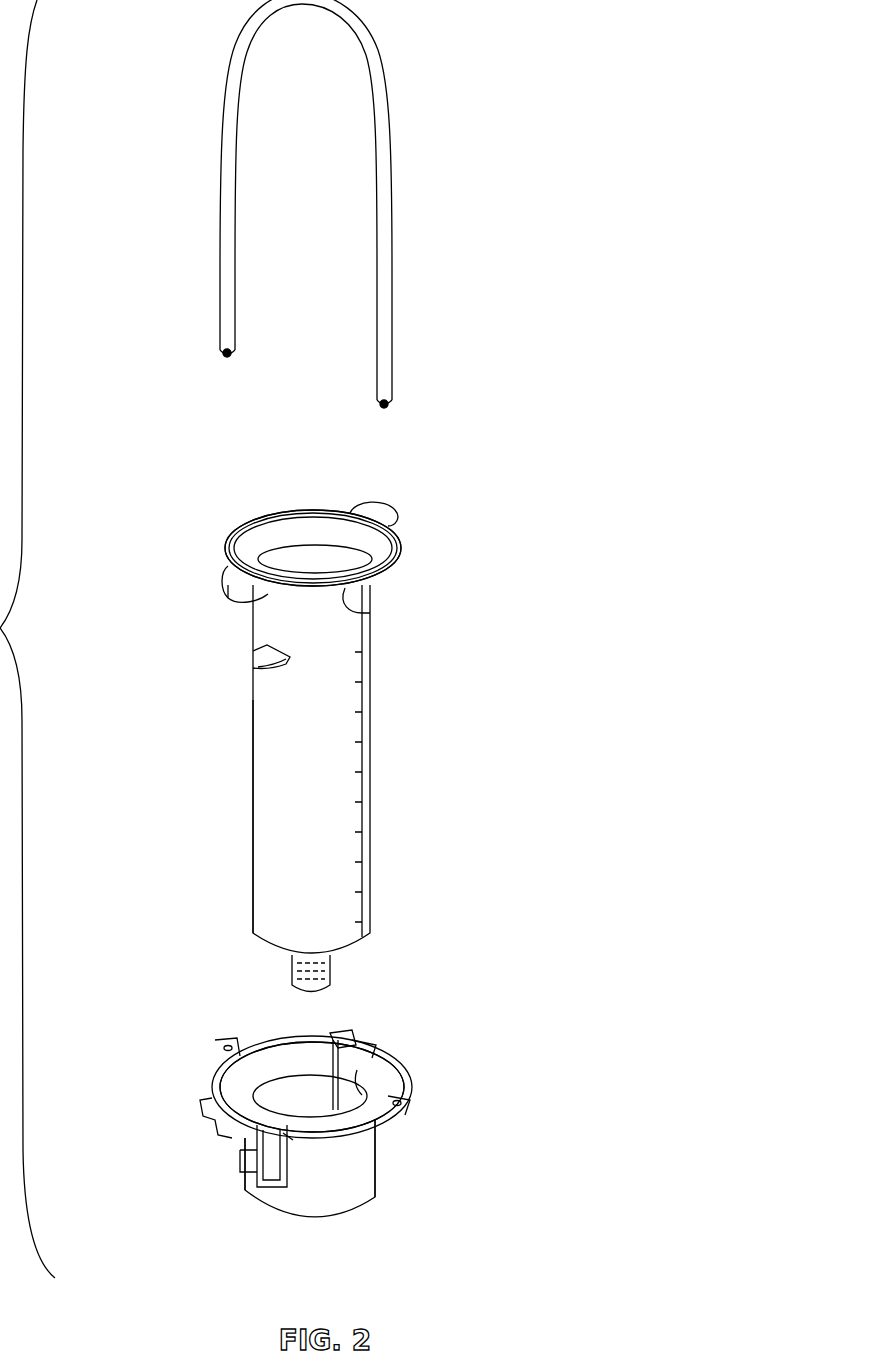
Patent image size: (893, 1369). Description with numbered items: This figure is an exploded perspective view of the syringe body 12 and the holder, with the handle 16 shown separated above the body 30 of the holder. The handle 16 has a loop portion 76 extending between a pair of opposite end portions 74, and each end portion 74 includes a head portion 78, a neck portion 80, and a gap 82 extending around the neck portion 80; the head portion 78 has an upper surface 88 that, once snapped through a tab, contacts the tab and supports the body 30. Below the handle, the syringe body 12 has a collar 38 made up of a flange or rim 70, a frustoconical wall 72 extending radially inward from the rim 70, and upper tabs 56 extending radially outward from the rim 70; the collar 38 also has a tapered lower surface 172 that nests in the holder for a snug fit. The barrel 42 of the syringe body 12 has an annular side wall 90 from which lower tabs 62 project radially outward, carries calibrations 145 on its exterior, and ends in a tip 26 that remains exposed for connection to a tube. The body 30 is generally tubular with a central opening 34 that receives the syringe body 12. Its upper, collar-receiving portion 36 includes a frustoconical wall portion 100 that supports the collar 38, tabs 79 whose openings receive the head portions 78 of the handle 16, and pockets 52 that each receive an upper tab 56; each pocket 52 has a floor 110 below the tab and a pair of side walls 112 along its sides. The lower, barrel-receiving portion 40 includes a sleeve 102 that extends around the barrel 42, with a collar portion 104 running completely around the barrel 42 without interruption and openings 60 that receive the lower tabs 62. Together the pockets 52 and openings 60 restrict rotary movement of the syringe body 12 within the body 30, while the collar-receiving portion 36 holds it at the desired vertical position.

The syringe body 12 is at (370, 772).
The handle 16 is at (385, 281).
The tip 26 is at (330, 978).
The body 30 is at (343, 1185).
The central opening 34 is at (318, 1082).
The upper, collar-receiving portion 36 is at (186, 1072).
The collar 38 is at (390, 545).
The lower, barrel-receiving portion 40 is at (248, 1162).
The barrel 42 is at (262, 882).
The pockets 52 is at (370, 1052).
The upper tabs 56 is at (385, 505).
The openings 60 is at (375, 1078).
The lower tabs 62 is at (253, 660).
The rim 70 is at (245, 516).
The frustoconical wall 72 is at (313, 528).
The end portions 74 is at (200, 312).
The loop portion 76 is at (390, 158).
The head portion 78 is at (387, 408).
The tabs 79 is at (215, 1050).
The neck portion 80 is at (380, 400).
The gap 82 is at (391, 401).
The upper surface 88 is at (220, 353).
The annular side wall 90 is at (260, 750).
The frustoconical wall portion 100 is at (282, 1055).
The sleeve 102 is at (352, 1157).
The collar portion 104 is at (313, 1198).
The floor 110 is at (268, 1160).
The side walls 112 is at (215, 1085).
The calibrations 145 is at (362, 842).
The lower surface 172 is at (370, 607).